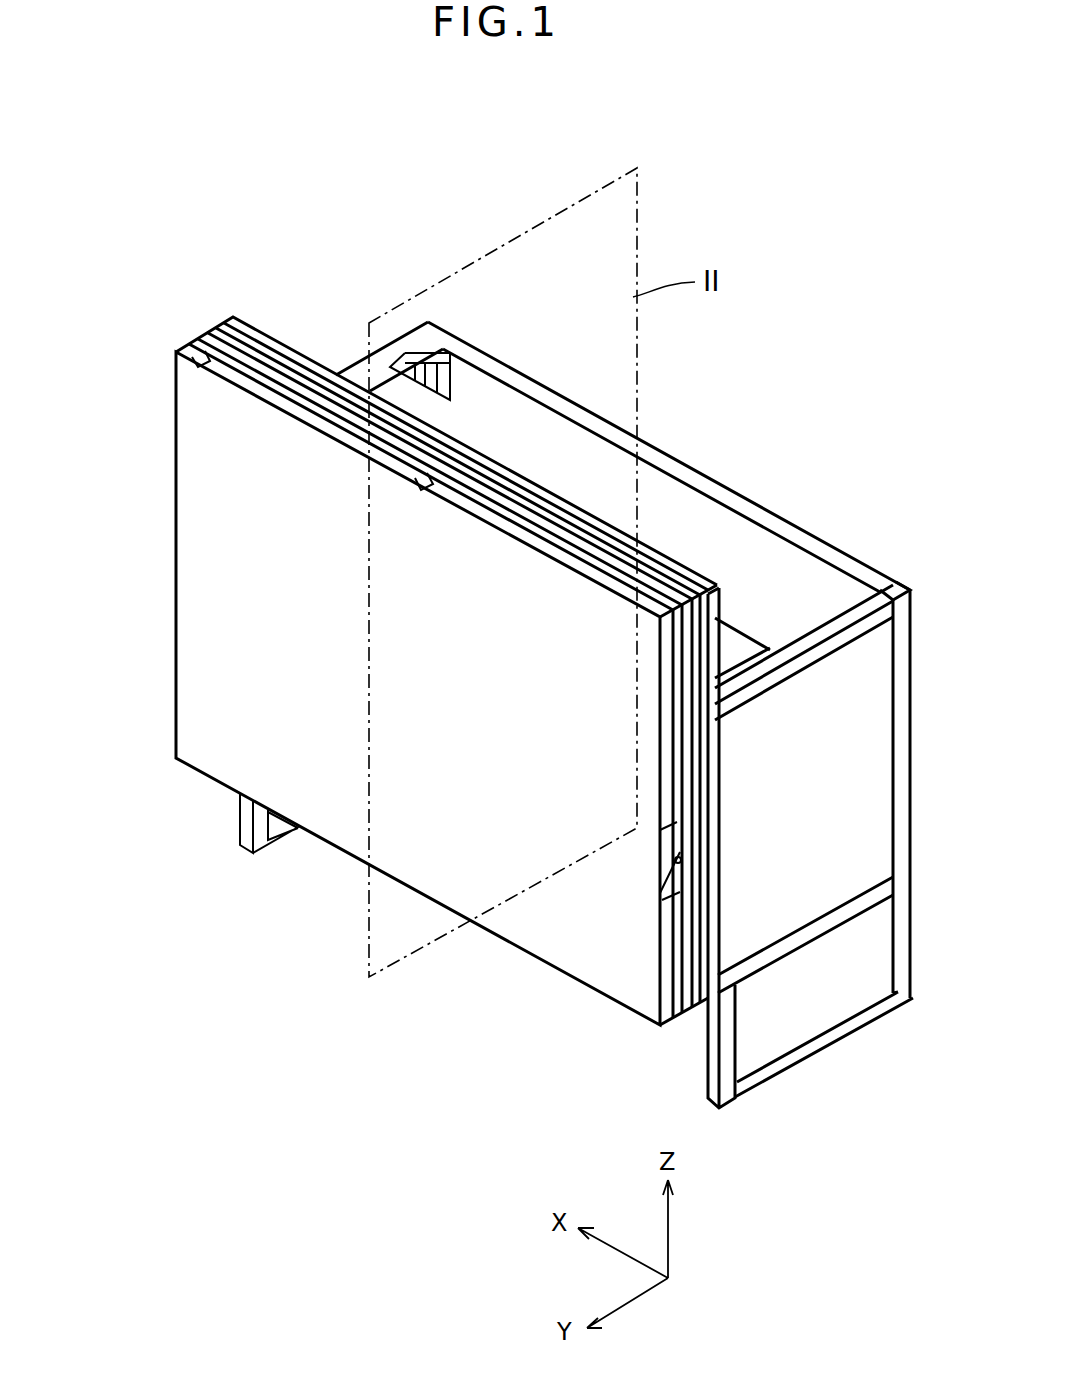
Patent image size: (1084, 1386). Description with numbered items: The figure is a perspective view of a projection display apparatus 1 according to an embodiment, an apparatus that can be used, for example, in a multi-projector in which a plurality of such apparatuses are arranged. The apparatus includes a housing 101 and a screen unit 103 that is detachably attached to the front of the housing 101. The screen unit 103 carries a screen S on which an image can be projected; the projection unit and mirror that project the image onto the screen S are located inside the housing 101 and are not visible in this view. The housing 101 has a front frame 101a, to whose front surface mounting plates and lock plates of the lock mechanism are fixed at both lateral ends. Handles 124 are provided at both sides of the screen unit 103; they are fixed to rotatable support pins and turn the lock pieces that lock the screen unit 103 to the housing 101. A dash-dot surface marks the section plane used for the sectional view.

The projection display apparatus 1 is at (822, 263).
The housing 101 is at (748, 498).
The front frame 101a is at (710, 791).
The screen unit 103 is at (176, 497).
The handle 124 is at (662, 890).
The screen S is at (325, 815).